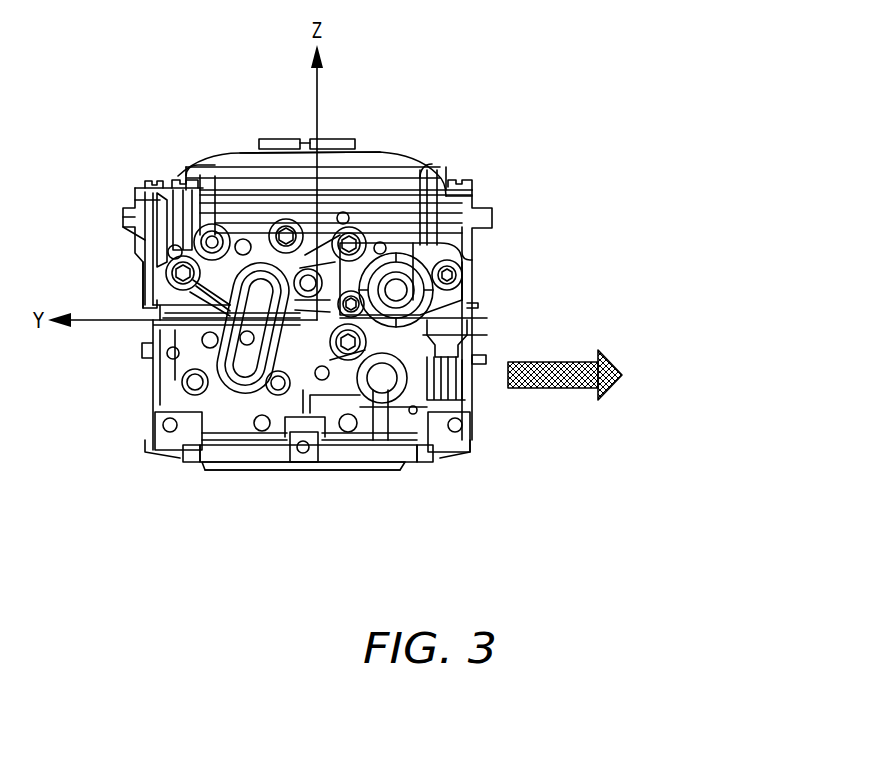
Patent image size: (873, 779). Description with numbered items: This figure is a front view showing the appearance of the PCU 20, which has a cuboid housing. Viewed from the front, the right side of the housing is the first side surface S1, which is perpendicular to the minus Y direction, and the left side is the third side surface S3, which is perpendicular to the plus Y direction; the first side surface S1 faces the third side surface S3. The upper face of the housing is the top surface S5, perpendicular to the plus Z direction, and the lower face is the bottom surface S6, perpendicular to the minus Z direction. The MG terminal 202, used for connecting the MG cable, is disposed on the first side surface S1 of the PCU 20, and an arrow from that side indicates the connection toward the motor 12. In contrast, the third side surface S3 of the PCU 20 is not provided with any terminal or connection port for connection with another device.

The PCU 20 is at (452, 124).
The MG terminal 202 is at (473, 373).
The first side surface S1 is at (462, 298).
The third side surface S3 is at (138, 287).
The top surface S5 is at (238, 152).
The bottom surface S6 is at (258, 470).
The motor 12 is at (655, 375).